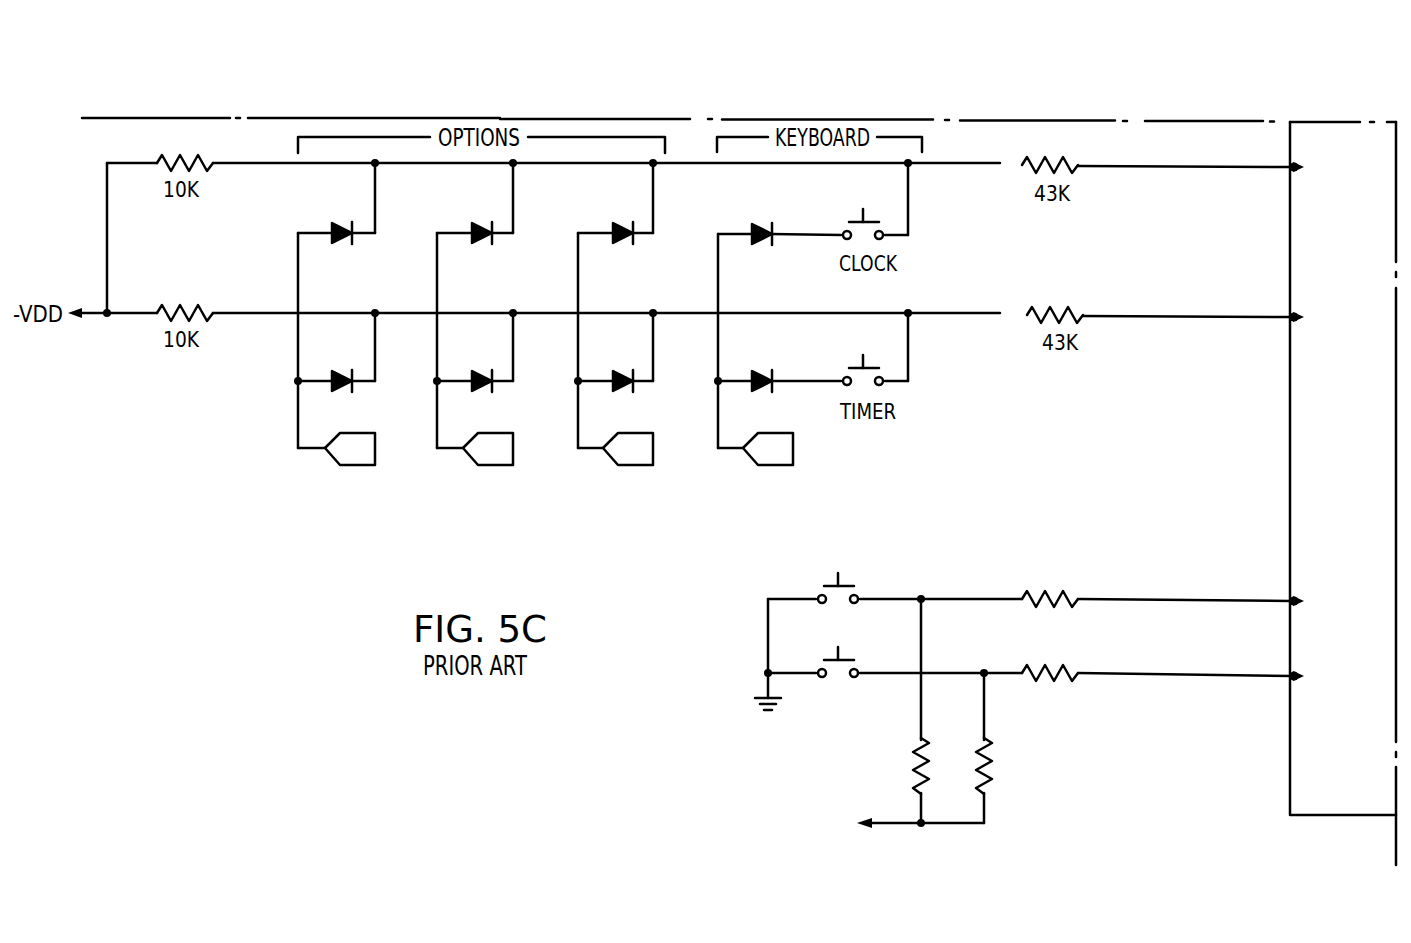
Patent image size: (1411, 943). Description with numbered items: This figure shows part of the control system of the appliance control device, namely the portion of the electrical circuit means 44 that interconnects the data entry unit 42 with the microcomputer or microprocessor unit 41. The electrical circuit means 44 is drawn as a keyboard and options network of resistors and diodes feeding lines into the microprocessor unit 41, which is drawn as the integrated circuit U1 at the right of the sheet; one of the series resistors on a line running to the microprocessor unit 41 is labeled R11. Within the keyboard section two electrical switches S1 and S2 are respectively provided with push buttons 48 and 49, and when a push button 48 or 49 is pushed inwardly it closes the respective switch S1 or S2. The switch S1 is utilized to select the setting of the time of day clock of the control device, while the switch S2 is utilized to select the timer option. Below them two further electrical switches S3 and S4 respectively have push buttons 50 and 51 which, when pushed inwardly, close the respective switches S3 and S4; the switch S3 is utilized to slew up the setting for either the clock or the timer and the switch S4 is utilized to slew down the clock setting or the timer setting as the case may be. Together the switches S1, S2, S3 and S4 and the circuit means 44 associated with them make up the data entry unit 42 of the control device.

The microcomputer or microprocessor unit 41 is at (1309, 493).
The data entry unit 42 is at (1005, 675).
The electrical circuit means 44 is at (739, 61).
The push button 48 is at (884, 206).
The push button 49 is at (891, 352).
The push button 50 is at (846, 568).
The push button 51 is at (789, 648).
The 43K resistor R11 is at (1058, 310).
The microcontroller U1 is at (1298, 740).
The electrical switch S1 is at (859, 219).
The electrical switch S2 is at (866, 366).
The electrical switch S3 is at (838, 585).
The electrical switch S4 is at (845, 658).